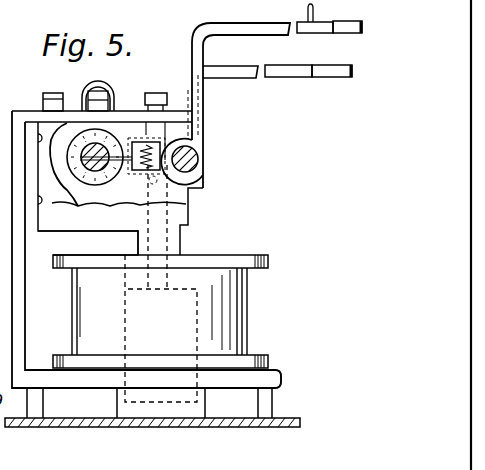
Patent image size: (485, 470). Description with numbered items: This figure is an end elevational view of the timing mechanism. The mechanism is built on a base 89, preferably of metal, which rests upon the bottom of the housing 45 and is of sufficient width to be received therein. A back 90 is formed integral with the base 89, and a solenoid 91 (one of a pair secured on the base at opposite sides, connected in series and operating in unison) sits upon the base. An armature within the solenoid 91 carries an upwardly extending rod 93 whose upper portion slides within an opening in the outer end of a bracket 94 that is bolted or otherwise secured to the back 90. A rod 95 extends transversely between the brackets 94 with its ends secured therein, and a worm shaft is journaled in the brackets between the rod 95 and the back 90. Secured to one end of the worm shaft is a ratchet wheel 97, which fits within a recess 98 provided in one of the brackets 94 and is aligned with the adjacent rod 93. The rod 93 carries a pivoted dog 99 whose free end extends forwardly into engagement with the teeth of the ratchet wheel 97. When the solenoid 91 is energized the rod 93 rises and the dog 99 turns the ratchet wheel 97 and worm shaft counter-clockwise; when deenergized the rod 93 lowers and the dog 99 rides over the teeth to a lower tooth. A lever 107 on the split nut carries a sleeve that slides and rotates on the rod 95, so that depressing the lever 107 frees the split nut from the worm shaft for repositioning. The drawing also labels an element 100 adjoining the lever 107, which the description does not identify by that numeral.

The housing 45 is at (298, 417).
The base 89 is at (268, 373).
The back 90 is at (22, 326).
The solenoid 91 is at (228, 300).
The rod 93 is at (158, 227).
The bracket 94 is at (55, 221).
The rod 95 is at (196, 160).
The ratchet wheel 97 is at (107, 163).
The recess 98 is at (64, 147).
The dog 99 is at (142, 143).
The arm 100 is at (196, 130).
The lever 107 is at (333, 67).